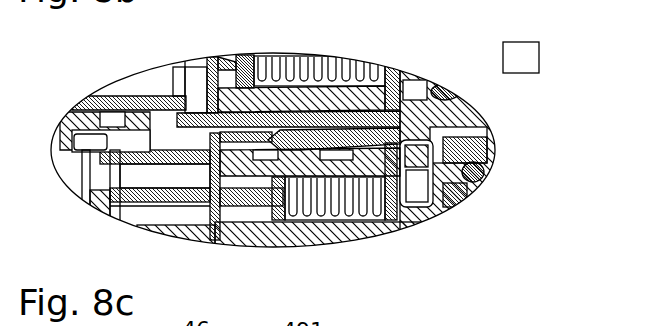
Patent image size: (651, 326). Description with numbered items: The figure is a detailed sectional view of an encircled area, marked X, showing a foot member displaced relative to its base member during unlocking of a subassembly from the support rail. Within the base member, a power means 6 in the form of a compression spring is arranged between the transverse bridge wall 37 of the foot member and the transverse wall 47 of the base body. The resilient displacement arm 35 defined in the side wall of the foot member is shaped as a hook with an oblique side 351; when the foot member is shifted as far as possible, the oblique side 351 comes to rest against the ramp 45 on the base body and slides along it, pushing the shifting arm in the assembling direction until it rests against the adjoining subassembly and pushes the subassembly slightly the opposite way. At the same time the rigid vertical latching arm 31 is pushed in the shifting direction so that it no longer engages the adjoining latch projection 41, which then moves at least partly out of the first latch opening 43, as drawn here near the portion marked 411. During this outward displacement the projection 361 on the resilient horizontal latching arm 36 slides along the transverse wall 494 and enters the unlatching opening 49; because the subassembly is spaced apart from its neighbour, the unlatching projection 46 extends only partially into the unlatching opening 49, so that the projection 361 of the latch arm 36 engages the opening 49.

The unlatching projection 46 is at (104, 92).
The transverse wall 494 is at (78, 118).
The unlatching opening 49 is at (115, 147).
The projection 361 is at (103, 166).
The resilient horizontal latching arm 36 is at (112, 172).
The transverse bridge wall 37 is at (167, 232).
The ramp 45 is at (283, 152).
The resilient displacement arm 35 is at (348, 62).
The latch projection 41 is at (400, 152).
The first latch opening 43 is at (440, 147).
The vertical latching arm 31 is at (483, 170).
The housing shoulder 411 is at (455, 203).
The transverse wall 47 is at (400, 213).
The power means 6 is at (373, 237).
The oblique side 351 is at (315, 243).
The detail X is at (462, 100).